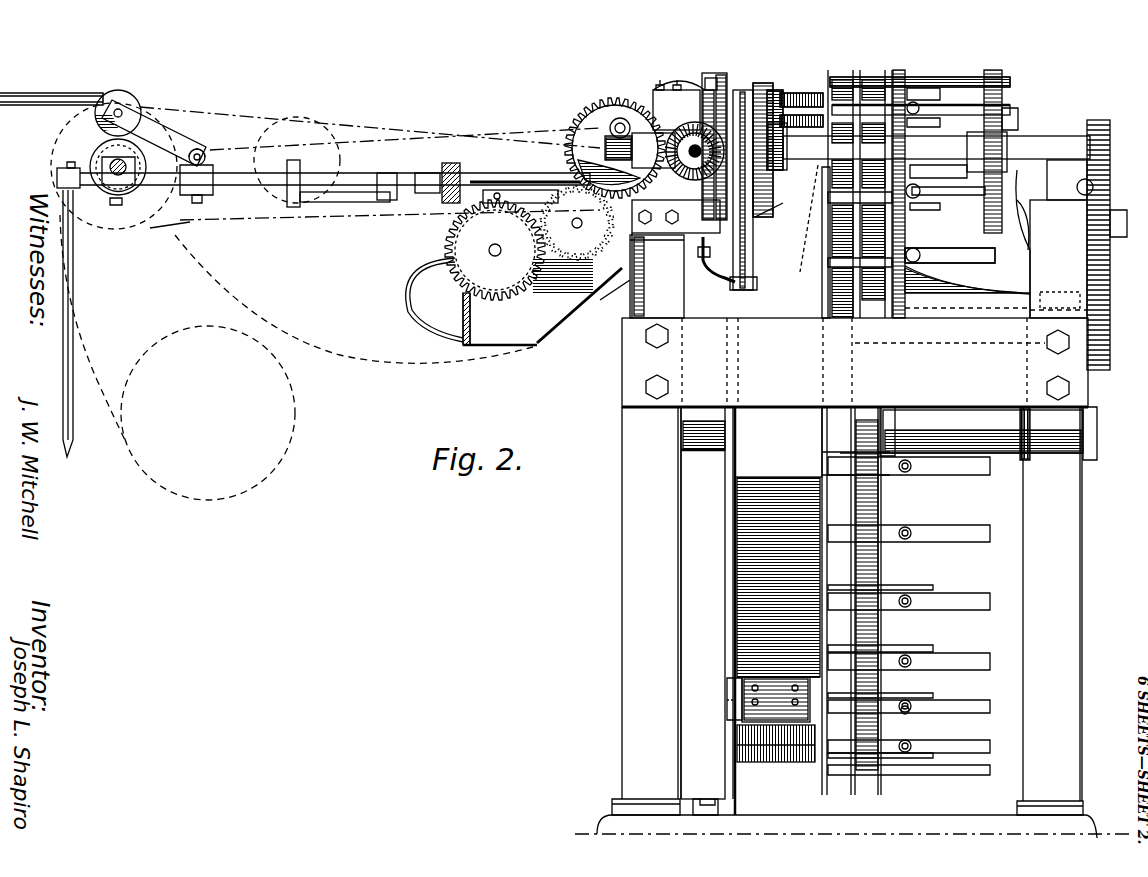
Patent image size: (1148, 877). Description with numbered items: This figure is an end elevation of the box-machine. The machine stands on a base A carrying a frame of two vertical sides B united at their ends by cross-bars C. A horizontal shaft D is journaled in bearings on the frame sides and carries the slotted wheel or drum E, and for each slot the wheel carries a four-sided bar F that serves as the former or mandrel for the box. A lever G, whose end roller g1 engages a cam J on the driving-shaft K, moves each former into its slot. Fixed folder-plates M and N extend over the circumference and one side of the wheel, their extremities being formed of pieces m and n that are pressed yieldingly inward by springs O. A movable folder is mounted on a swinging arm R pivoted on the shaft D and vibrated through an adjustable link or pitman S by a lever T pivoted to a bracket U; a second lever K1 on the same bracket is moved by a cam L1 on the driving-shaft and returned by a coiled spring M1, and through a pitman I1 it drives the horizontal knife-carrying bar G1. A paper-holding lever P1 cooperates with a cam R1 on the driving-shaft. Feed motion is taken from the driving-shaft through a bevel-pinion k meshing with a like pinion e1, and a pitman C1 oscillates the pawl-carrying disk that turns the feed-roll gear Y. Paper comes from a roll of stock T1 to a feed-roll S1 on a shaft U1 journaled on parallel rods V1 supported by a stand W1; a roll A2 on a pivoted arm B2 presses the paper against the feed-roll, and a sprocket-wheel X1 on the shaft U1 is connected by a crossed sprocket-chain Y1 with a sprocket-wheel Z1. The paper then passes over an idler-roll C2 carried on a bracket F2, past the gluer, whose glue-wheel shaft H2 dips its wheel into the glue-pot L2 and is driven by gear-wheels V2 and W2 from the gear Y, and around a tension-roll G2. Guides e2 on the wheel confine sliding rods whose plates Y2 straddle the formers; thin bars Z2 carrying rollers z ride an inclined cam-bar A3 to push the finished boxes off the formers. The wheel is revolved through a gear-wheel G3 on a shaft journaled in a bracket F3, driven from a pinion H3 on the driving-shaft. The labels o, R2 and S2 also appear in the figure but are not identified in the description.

The base A is at (858, 830).
The frame side B is at (852, 604).
The cross-bar C is at (855, 362).
The horizontal shaft D is at (938, 420).
The wheel or drum E is at (832, 495).
The fixed folder-plate M is at (778, 442).
The swinging arm R is at (712, 448).
The fixed folder-plate N is at (870, 548).
The spring O is at (772, 745).
The piece n is at (742, 696).
The piece m is at (740, 720).
The slot o is at (727, 712).
The roller z is at (907, 525).
The thin bar Z2 is at (965, 470).
The guide e2 is at (922, 705).
The gear-wheel G3 is at (1085, 353).
The cam R1 is at (850, 92).
The roller g1 is at (1000, 110).
The cam J is at (1035, 140).
The driving-shaft K is at (1068, 160).
The pinion H3 is at (1105, 128).
The bracket F3 is at (1060, 312).
The lever G is at (1025, 250).
The inclined track or cam-bar A3 is at (907, 225).
The cam L1 is at (778, 180).
The former or mandrel F is at (795, 250).
The plate Y2 is at (807, 223).
The lever T is at (745, 240).
The lever K1 is at (730, 100).
The coiled spring M1 is at (708, 80).
The link or pitman I1 is at (782, 93).
The arm or lever P1 is at (805, 93).
The bevel-pinion k is at (683, 151).
The sprocket-wheel Z1 is at (660, 110).
The pitman C1 is at (640, 110).
The gear Y is at (615, 142).
The bevel-pinion e1 is at (676, 216).
The bracket U is at (665, 235).
The horizontal bar G1 is at (650, 222).
The link or pitman S is at (700, 283).
The shaft H2 is at (495, 250).
The gear-wheel W2 is at (465, 245).
The gear-wheel V2 is at (577, 223).
The bracket F2 is at (545, 330).
The idler-roll C2 is at (580, 285).
The glue-pot L2 is at (445, 300).
The arm B2 is at (76, 100).
The roll A2 is at (135, 95).
The sprocket-wheel X1 is at (180, 125).
The shaft U1 is at (110, 160).
The feed-roll S1 is at (160, 193).
The parallel rod V1 is at (252, 192).
The stand W1 is at (75, 295).
The roll of stock T1 is at (165, 345).
The tension-roll G2 is at (307, 140).
The crossed sprocket-chain Y1 is at (402, 170).
The belt R2 is at (450, 205).
The rod S2 is at (520, 185).